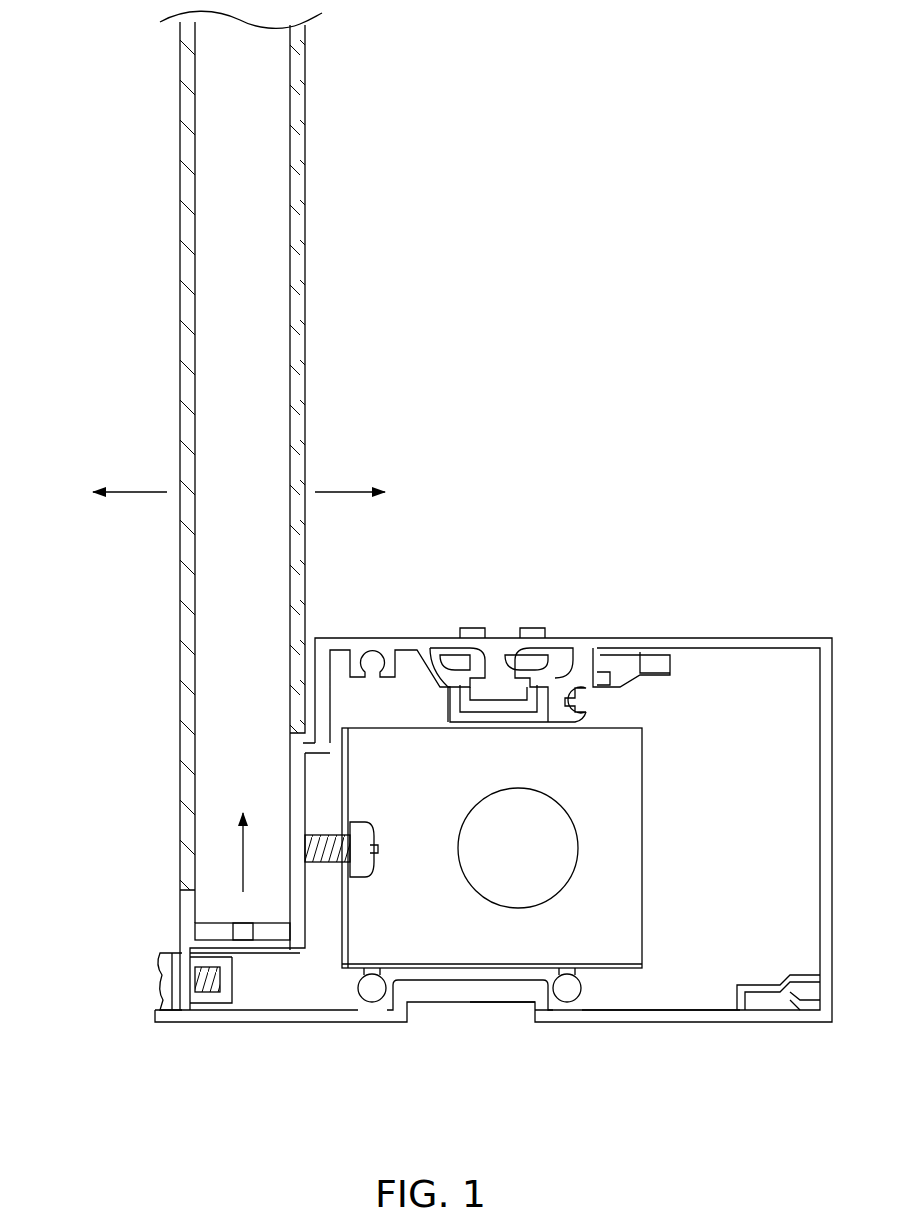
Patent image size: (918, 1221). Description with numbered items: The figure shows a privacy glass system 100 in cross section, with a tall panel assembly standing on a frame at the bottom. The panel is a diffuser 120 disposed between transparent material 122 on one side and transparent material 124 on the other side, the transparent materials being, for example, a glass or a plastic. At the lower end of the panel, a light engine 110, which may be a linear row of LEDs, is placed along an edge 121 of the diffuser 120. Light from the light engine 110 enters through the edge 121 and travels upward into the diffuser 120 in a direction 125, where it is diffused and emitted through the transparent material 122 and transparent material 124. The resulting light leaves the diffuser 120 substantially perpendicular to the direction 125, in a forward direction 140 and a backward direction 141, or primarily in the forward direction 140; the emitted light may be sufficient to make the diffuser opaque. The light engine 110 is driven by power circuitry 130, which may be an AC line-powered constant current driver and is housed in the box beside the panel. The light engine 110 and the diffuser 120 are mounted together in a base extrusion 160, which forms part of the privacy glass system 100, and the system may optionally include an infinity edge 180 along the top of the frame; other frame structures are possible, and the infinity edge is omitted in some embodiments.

The privacy glass system 100 is at (793, 348).
The light engine 110 is at (391, 921).
The diffuser 120 is at (202, 510).
The edge 121 is at (248, 945).
The transparent material 122 is at (180, 242).
The transparent material 124 is at (307, 255).
The direction 125 is at (238, 833).
The power circuitry 130 is at (458, 920).
The forward direction 140 is at (377, 497).
The backward direction 141 is at (102, 497).
The base extrusion 160 is at (160, 960).
The infinity edge 180 is at (328, 637).